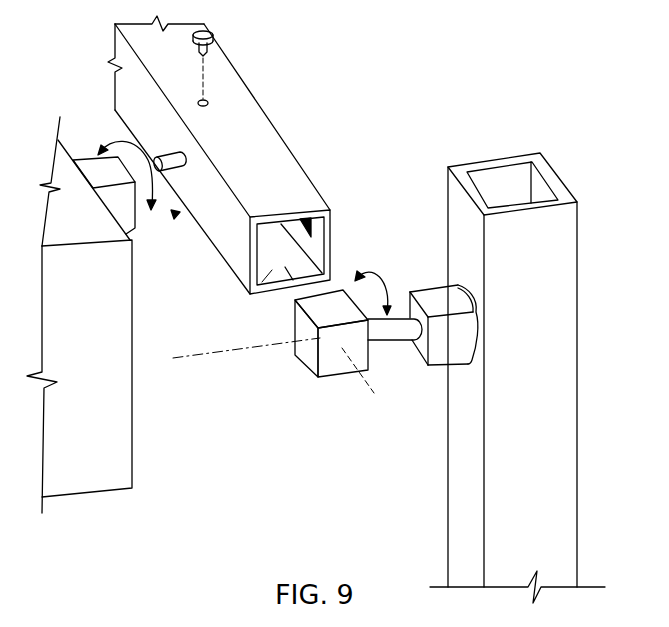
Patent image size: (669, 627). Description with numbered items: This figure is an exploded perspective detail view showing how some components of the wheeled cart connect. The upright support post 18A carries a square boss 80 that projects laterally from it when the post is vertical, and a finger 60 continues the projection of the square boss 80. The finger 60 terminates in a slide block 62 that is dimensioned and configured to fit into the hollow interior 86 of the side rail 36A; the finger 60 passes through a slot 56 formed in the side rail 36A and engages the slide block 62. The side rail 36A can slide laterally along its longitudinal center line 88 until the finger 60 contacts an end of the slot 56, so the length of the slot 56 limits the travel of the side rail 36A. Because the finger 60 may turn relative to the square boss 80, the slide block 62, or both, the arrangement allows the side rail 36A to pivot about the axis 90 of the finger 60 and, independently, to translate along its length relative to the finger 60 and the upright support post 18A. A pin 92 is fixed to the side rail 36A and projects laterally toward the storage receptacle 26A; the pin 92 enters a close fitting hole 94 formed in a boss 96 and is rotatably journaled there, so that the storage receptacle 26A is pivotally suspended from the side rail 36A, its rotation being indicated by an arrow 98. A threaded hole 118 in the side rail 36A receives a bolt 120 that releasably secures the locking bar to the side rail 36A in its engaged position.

The upright support post 18A is at (557, 390).
The storage receptacle 26A is at (115, 299).
The side rail 36A is at (285, 188).
The slot 56 is at (313, 228).
The finger 60 is at (388, 341).
The slide block 62 is at (307, 348).
The square boss 80 is at (426, 362).
The hollow interior 86 is at (264, 282).
The longitudinal center line 88 is at (365, 379).
The axis 90 is at (202, 354).
The pin 92 is at (166, 156).
The hole 94 is at (176, 216).
The boss 96 is at (137, 220).
The arrow 98 is at (112, 142).
The threaded hole 118 is at (210, 102).
The bolt 120 is at (213, 39).